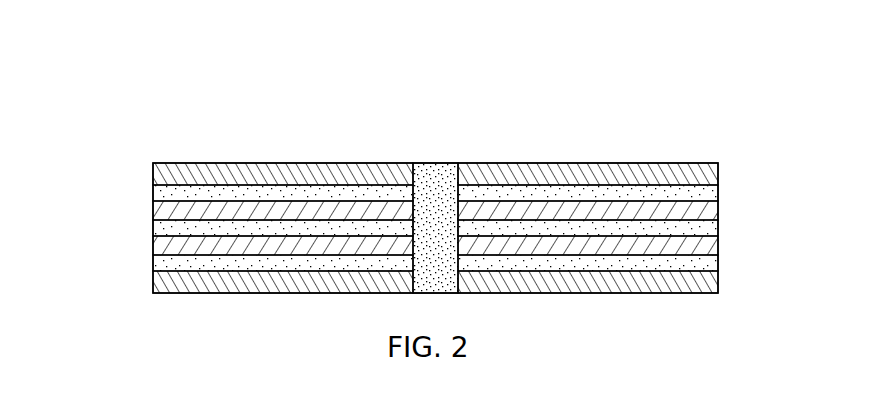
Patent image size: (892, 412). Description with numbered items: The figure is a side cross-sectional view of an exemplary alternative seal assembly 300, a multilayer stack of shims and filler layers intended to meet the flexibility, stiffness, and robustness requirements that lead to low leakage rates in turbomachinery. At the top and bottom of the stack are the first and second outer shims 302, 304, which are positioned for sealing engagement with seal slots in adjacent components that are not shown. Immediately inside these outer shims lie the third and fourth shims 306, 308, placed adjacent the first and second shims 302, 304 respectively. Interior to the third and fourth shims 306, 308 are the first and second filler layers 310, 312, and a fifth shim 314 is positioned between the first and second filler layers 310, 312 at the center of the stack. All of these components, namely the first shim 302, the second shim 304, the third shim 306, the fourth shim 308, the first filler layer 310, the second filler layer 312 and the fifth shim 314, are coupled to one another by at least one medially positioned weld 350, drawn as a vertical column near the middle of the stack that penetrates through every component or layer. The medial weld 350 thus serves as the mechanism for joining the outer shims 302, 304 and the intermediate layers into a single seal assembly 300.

The seal assembly 300 is at (604, 82).
The first outer shim 302 is at (153, 177).
The second outer shim 304 is at (153, 285).
The third shim 306 is at (153, 195).
The fourth shim 308 is at (153, 262).
The first filler layer 310 is at (153, 213).
The second filler layer 312 is at (153, 246).
The fifth shim 314 is at (153, 228).
The medial weld 350 is at (438, 172).